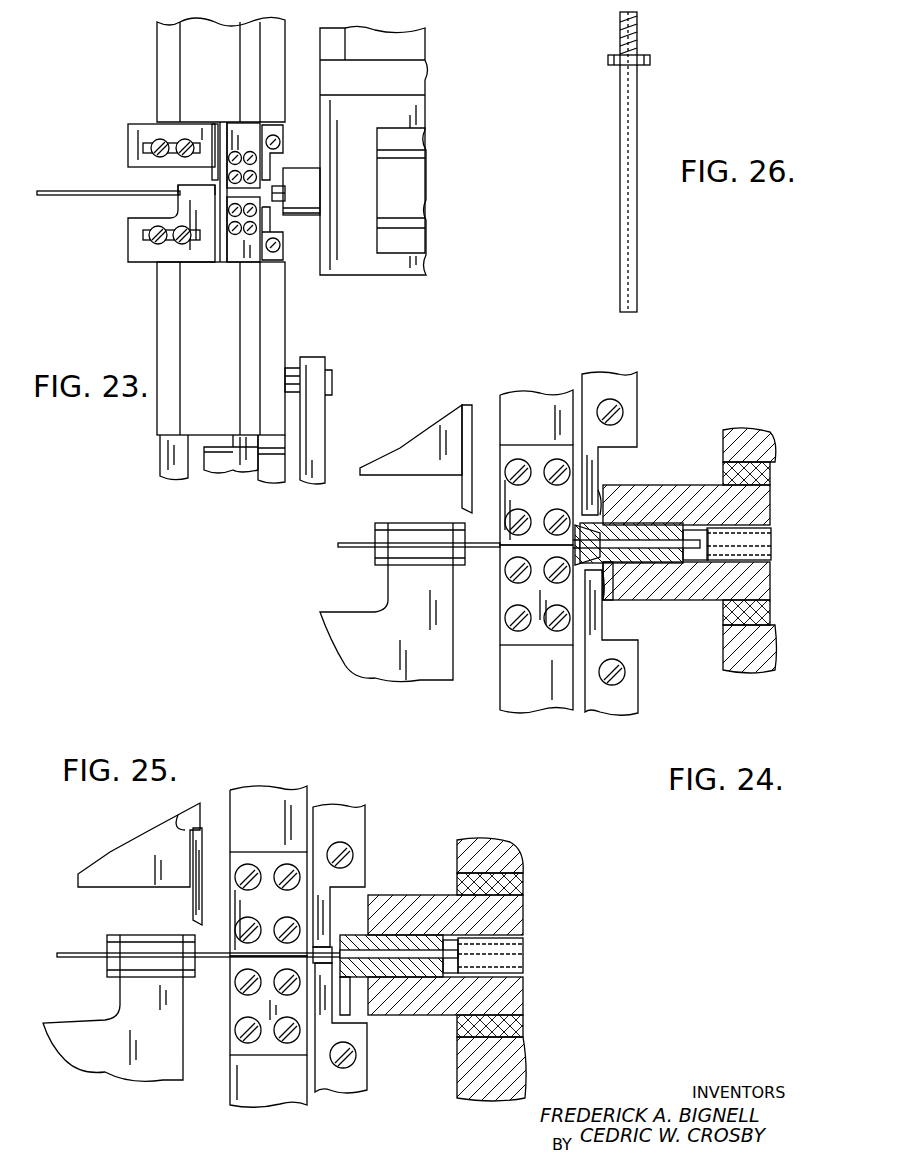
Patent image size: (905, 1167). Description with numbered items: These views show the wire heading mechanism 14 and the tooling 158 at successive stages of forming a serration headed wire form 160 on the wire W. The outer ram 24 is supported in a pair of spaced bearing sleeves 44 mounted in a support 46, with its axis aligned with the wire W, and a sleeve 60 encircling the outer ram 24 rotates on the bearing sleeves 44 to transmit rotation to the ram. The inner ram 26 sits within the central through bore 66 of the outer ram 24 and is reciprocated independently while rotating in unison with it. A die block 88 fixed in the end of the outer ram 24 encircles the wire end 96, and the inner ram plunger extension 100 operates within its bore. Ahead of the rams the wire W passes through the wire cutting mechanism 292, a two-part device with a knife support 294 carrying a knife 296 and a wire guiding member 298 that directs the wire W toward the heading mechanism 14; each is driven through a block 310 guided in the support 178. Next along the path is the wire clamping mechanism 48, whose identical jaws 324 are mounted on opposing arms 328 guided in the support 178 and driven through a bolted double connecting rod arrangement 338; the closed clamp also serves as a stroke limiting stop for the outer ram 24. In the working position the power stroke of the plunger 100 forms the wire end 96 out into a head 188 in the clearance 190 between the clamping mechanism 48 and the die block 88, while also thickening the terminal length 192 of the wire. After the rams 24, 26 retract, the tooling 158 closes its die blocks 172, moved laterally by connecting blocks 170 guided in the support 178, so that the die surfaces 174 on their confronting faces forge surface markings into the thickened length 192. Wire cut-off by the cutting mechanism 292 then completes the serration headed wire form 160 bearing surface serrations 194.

In FIG. 24, the wire heading mechanism 14 is at (688, 443).
In FIG. 23, the outer ram 24 is at (321, 196).
In FIG. 24, the outer ram 24 is at (772, 510).
In FIG. 25, the outer ram 24 is at (524, 920).
In FIG. 24, the inner ram 26 is at (771, 537).
In FIG. 25, the inner ram 26 is at (524, 952).
In FIG. 24, the bearing sleeves 44 is at (771, 475).
In FIG. 25, the bearing sleeves 44 is at (523, 882).
In FIG. 23, the support 46 is at (405, 271).
In FIG. 24, the support 46 is at (750, 550).
In FIG. 25, the support 46 is at (503, 855).
In FIG. 23, the wire clamping mechanism 48 is at (264, 194).
In FIG. 24, the wire clamping mechanism 48 is at (510, 598).
In FIG. 25, the wire clamping mechanism 48 is at (230, 983).
In FIG. 23, the sleeve 60 is at (422, 186).
In FIG. 24, the central through bore 66 is at (698, 563).
In FIG. 23, the die block 88 is at (286, 194).
In FIG. 24, the die block 88 is at (662, 524).
In FIG. 25, the die block 88 is at (425, 972).
In FIG. 24, the wire end 96 is at (578, 526).
In FIG. 24, the inner ram plunger extension 100 is at (697, 528).
In FIG. 25, the inner ram plunger extension 100 is at (387, 952).
In FIG. 23, the tooling 158 is at (274, 171).
In FIG. 24, the tooling 158 is at (627, 458).
In FIG. 25, the tooling 158 is at (343, 804).
In FIG. 26, the serration headed wire form 160 is at (651, 113).
In FIG. 24, the connecting block 170 is at (634, 372).
In FIG. 25, the connecting block 170 is at (361, 810).
In FIG. 24, the die blocks 172 is at (638, 413).
In FIG. 25, the die blocks 172 is at (365, 848).
In FIG. 24, the die surfaces 174 is at (610, 488).
In FIG. 25, the die surfaces 174 is at (323, 946).
In FIG. 23, the support 178 is at (226, 72).
In FIG. 26, the head 188 is at (652, 60).
In FIG. 24, the head 188 is at (573, 545).
In FIG. 24, the clearance 190 is at (573, 558).
In FIG. 26, the terminal length 192 is at (640, 33).
In FIG. 24, the terminal length 192 is at (624, 581).
In FIG. 25, the terminal length 192 is at (347, 996).
In FIG. 26, the surface serrations 194 is at (620, 37).
In FIG. 23, the wire cutting mechanism 292 is at (172, 180).
In FIG. 24, the wire cutting mechanism 292 is at (413, 508).
In FIG. 25, the wire cutting mechanism 292 is at (148, 918).
In FIG. 23, the knife support 294 is at (128, 128).
In FIG. 24, the knife support 294 is at (428, 438).
In FIG. 25, the knife support 294 is at (132, 848).
In FIG. 23, the knife 296 is at (214, 136).
In FIG. 24, the knife 296 is at (464, 489).
In FIG. 25, the knife 296 is at (184, 815).
In FIG. 23, the wire guiding member 298 is at (185, 212).
In FIG. 24, the wire guiding member 298 is at (402, 573).
In FIG. 25, the wire guiding member 298 is at (130, 983).
In FIG. 23, the block 310 is at (177, 473).
In FIG. 23, the jaws 324 is at (240, 150).
In FIG. 24, the jaws 324 is at (540, 445).
In FIG. 25, the jaws 324 is at (265, 866).
In FIG. 23, the arms 328 is at (248, 467).
In FIG. 24, the arms 328 is at (524, 394).
In FIG. 25, the arms 328 is at (275, 781).
In FIG. 23, the bolted double connecting rod arrangement 338 is at (220, 468).
In FIG. 23, the wire W is at (55, 190).
In FIG. 26, the wire W is at (636, 143).
In FIG. 24, the wire W is at (355, 544).
In FIG. 25, the wire W is at (88, 955).